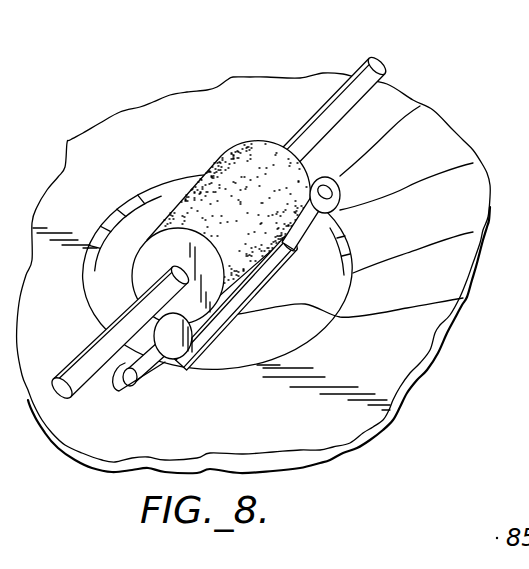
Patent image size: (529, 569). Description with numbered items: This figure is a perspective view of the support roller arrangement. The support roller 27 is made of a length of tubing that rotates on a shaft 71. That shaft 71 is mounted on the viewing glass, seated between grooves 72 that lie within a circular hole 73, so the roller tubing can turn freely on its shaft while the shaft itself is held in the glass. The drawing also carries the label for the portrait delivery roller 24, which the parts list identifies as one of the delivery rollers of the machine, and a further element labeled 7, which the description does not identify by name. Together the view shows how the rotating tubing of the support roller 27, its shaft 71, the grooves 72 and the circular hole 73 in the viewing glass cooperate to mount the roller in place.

The base plate 7 is at (145, 157).
The portrait delivery roller 24 is at (240, 175).
The grooves 72 is at (420, 106).
The shaft 71 is at (473, 163).
The circular hole 73 is at (473, 232).
The support roller 27 is at (463, 298).